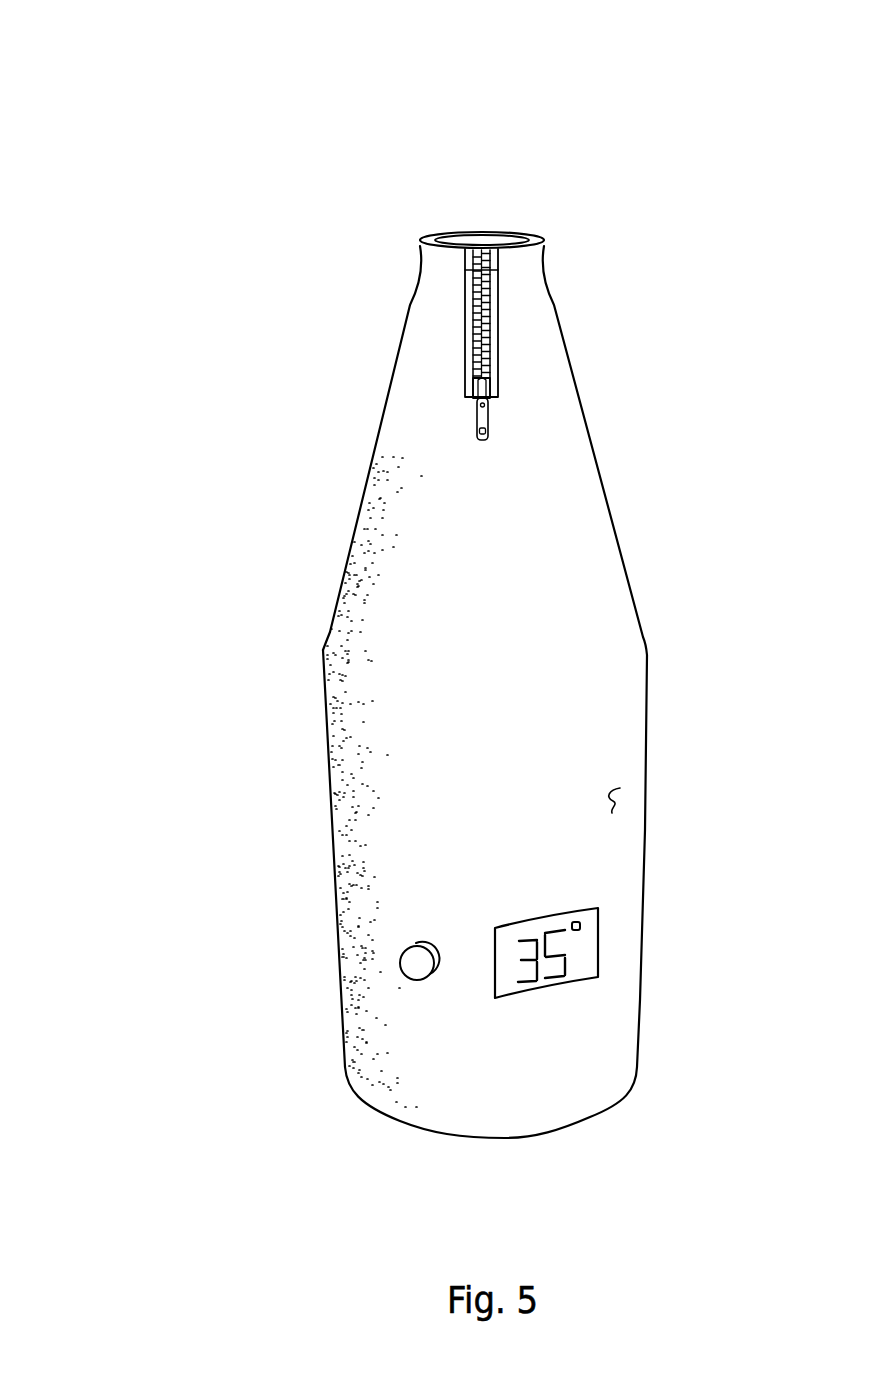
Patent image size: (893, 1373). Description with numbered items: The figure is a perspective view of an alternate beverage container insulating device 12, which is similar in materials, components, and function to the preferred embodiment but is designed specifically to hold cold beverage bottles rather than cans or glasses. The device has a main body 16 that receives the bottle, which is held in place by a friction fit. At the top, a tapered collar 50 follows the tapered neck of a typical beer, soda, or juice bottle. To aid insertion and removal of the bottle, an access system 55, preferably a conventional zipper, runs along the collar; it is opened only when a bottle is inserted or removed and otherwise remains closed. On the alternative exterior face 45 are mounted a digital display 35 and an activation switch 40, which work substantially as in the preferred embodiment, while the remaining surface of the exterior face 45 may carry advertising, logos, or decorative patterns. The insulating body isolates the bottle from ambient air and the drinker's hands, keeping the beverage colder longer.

The alternate beverage container insulating device 12 is at (97, 103).
The body of cover 16 is at (650, 697).
The digital display 35 is at (585, 957).
The activation switch 40 is at (417, 963).
The alternative exterior face 45 is at (618, 798).
The tapered collar 50 is at (563, 452).
The access system 55 is at (490, 318).